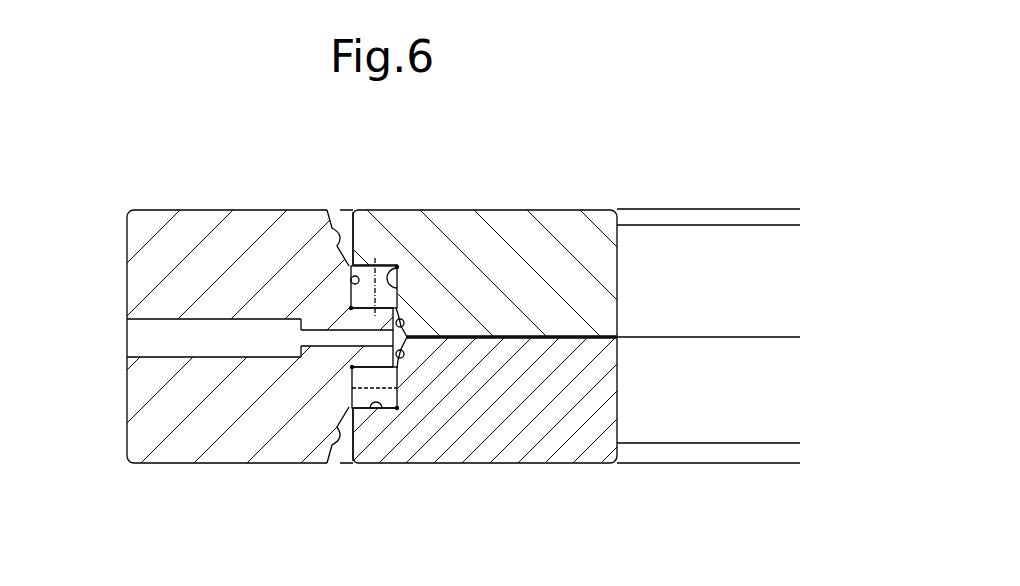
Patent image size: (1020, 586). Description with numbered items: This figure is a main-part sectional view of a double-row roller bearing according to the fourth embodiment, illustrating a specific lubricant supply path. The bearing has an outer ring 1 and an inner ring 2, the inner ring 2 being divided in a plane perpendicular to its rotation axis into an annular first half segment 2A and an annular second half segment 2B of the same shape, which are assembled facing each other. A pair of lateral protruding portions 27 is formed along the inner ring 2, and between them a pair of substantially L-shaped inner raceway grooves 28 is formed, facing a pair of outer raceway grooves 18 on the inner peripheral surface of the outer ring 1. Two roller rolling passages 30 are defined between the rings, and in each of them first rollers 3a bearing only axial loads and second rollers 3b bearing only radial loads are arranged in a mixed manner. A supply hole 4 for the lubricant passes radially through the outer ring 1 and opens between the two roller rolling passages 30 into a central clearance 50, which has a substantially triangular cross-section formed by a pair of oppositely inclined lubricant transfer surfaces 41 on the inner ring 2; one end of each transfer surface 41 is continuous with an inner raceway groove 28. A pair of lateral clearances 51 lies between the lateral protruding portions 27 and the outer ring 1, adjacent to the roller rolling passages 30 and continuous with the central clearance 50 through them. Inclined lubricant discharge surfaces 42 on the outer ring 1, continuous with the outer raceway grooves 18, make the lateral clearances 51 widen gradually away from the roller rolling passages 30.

The outer ring 1 is at (163, 207).
The inner ring 2 is at (552, 300).
The first half segment 2A is at (605, 290).
The second half segment 2B is at (607, 402).
The first rollers 3a is at (350, 297).
The second rollers 3b is at (360, 377).
The supply hole 4 is at (170, 357).
The outer raceway grooves 18 is at (350, 267).
The lateral protruding portions 27 is at (368, 221).
The inner raceway grooves 28 is at (386, 268).
The roller rolling passages 30 is at (404, 274).
The lubricant transfer surfaces 41 is at (402, 322).
The lubricant discharge surfaces 42 is at (337, 241).
The central clearance 50 is at (413, 300).
The lateral clearances 51 is at (337, 208).